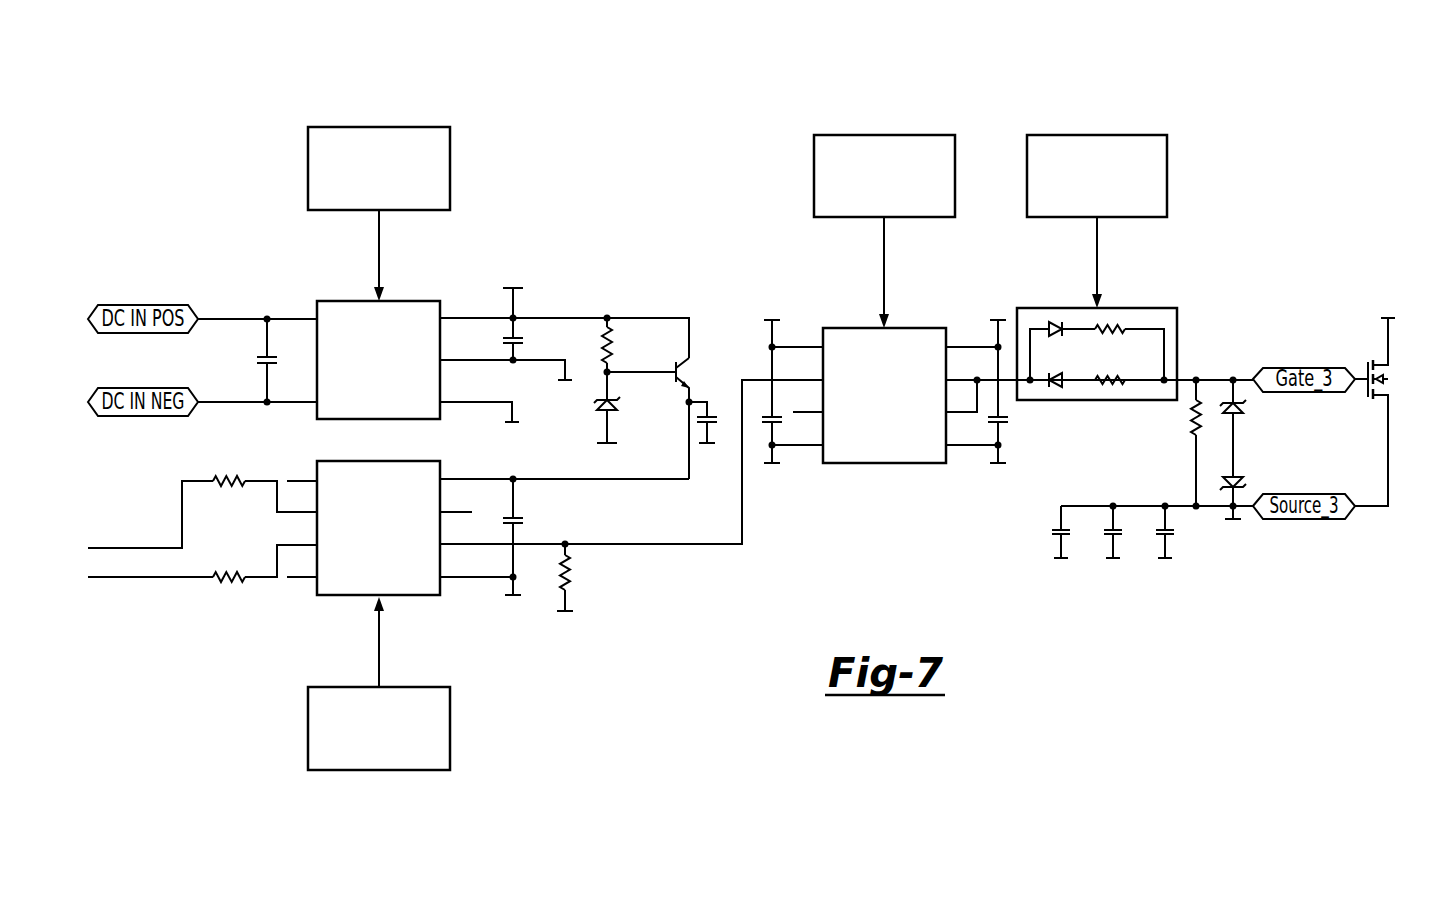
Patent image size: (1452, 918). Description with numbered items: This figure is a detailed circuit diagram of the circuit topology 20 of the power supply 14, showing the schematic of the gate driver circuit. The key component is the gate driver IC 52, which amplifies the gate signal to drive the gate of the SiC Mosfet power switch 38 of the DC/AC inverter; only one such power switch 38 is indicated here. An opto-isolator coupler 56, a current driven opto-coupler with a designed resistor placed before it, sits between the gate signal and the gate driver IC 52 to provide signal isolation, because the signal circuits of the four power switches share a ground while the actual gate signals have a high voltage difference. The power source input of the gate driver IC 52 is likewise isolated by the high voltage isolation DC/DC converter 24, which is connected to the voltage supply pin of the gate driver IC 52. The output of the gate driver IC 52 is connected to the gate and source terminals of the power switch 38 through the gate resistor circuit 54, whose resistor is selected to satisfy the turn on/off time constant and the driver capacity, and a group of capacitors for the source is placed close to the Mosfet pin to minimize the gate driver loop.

The power supply 14 is at (1050, 70).
The circuit topology 20 is at (661, 291).
The DC/DC converter 24 is at (415, 128).
The SiC Mosfet power switch 38 is at (1397, 374).
The gate driver IC 52 is at (920, 135).
The gate resistor circuit 54 is at (1133, 135).
The opto-isolator coupler 56 is at (412, 770).